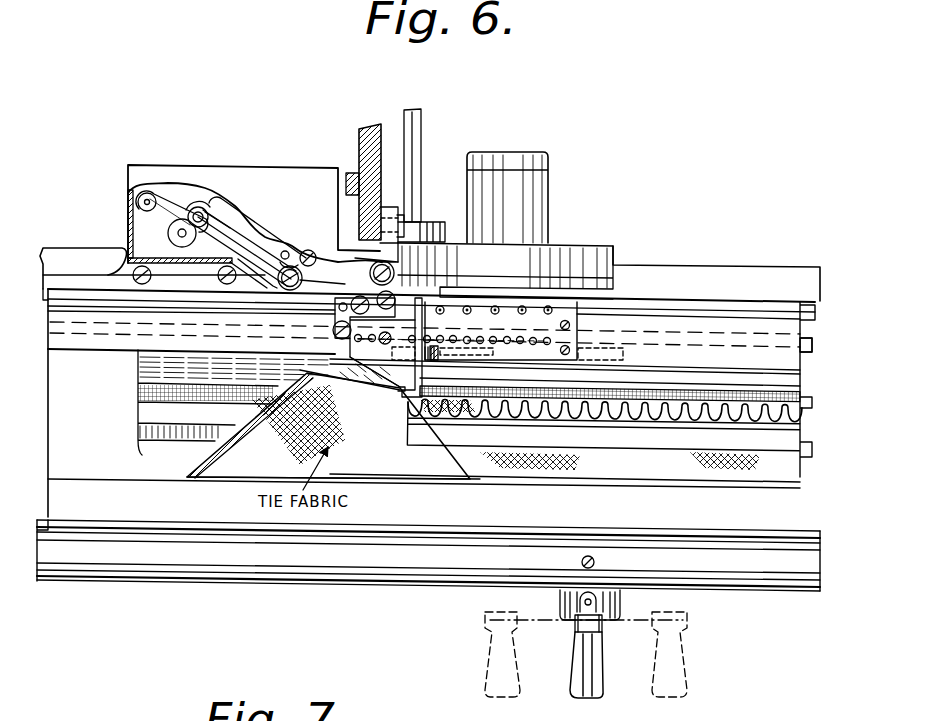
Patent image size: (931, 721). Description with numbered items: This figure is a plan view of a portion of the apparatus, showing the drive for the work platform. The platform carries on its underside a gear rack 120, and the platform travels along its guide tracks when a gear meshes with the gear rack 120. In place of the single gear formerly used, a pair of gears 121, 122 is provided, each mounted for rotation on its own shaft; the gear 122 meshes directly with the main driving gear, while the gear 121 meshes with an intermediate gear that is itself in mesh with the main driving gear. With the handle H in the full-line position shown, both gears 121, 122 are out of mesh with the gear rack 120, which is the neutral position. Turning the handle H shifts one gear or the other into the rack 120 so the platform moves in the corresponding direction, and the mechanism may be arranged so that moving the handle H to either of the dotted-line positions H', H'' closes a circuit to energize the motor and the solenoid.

The gear rack 120 is at (812, 345).
The gear 121 is at (601, 361).
The gear 122 is at (462, 356).
The handle H is at (590, 655).
The dotted line position of handle H' is at (693, 654).
The dotted line position of handle H'' is at (486, 654).